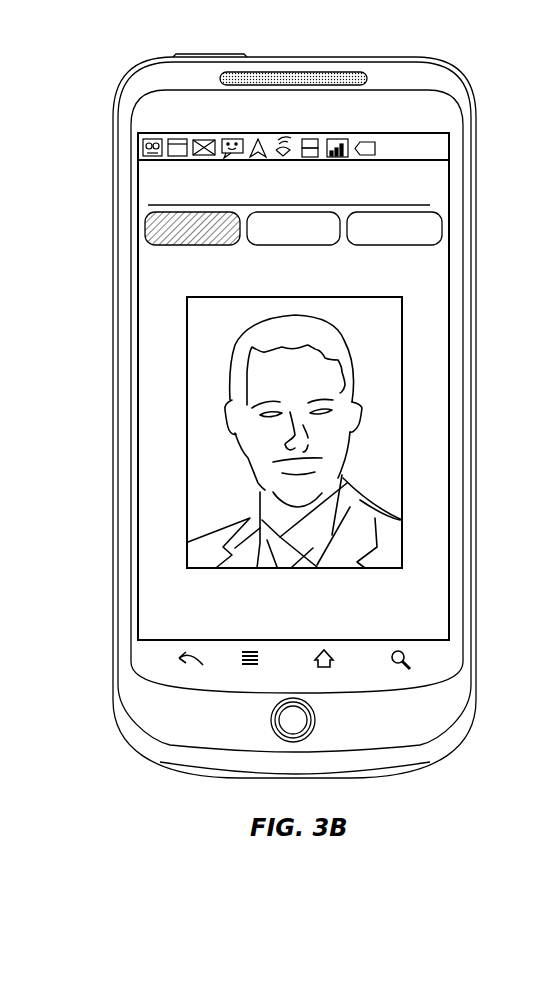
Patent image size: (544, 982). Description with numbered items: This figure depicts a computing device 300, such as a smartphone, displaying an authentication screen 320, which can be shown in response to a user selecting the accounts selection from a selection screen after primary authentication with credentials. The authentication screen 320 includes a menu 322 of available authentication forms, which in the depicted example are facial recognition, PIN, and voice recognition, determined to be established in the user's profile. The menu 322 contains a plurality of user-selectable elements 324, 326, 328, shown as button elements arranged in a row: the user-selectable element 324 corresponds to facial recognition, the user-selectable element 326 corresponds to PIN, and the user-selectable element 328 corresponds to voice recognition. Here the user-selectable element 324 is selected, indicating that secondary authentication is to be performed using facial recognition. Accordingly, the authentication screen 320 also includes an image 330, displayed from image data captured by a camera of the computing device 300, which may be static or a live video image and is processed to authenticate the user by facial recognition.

The computing device 300 is at (472, 110).
The authentication screen 320 is at (428, 193).
The menu 322 is at (294, 243).
The user-selectable element 324 is at (147, 230).
The user-selectable element 326 is at (283, 245).
The user-selectable element 328 is at (385, 245).
The image 330 is at (185, 402).